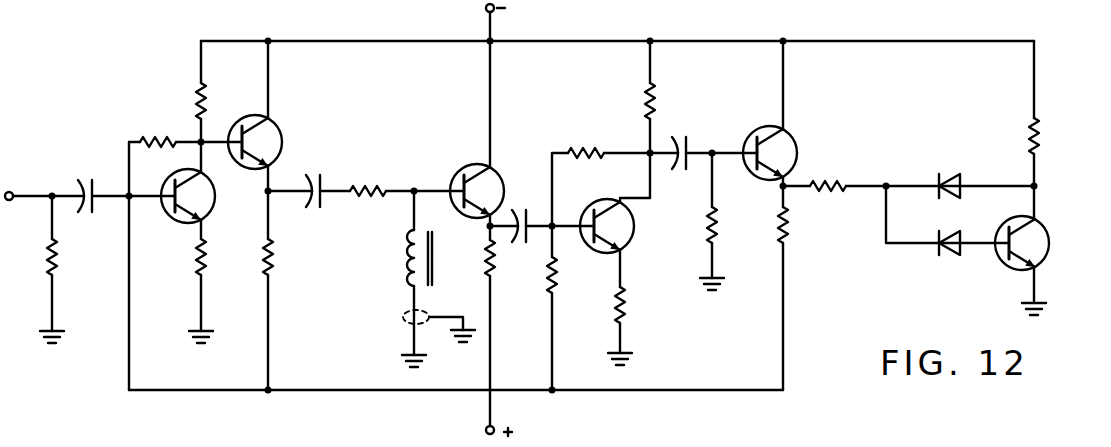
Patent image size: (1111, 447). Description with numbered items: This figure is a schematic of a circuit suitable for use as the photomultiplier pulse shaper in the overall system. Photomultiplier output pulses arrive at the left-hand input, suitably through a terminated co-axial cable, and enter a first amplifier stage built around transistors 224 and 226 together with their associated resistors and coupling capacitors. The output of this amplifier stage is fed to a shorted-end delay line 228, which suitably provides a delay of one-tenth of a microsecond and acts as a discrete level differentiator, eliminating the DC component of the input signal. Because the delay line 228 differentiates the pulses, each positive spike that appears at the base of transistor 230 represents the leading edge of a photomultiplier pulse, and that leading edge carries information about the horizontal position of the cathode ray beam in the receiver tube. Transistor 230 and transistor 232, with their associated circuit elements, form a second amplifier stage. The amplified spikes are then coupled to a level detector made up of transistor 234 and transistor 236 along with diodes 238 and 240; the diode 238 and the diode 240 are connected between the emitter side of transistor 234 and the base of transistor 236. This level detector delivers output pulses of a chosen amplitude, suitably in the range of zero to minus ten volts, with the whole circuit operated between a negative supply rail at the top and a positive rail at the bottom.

The transistor 224 is at (171, 216).
The transistor 226 is at (282, 131).
The shorted-end delay line 228 is at (410, 262).
The transistor 230 is at (461, 169).
The transistor 232 is at (637, 222).
The transistor 234 is at (798, 159).
The transistor 236 is at (1046, 237).
The diode 238 is at (952, 172).
The diode 240 is at (948, 259).